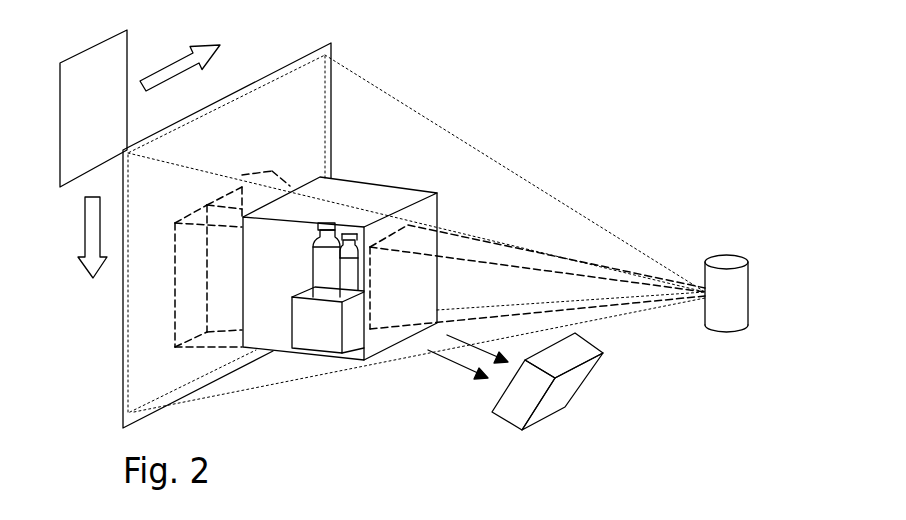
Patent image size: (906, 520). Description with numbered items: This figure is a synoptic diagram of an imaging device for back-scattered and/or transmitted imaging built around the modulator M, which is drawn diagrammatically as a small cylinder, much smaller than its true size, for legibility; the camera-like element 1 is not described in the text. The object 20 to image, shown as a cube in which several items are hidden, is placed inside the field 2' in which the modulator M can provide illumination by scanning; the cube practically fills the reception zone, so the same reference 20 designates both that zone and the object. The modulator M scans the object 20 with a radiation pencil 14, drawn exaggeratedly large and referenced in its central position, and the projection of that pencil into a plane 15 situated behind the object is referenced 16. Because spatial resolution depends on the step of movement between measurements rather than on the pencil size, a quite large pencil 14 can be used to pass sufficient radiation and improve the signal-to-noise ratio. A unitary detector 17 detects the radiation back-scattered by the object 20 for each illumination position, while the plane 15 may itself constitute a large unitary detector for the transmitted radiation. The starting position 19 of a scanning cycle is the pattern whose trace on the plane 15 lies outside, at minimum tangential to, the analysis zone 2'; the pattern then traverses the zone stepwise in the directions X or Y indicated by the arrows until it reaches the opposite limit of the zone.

The camera 1 is at (718, 293).
The field 2' is at (416, 233).
The radiation pencil 14 is at (480, 250).
The plane 15 is at (332, 54).
The projection of the radiation pencil 16 is at (175, 311).
The unitary detector 17 is at (572, 387).
The starting position 19 is at (80, 118).
The object to image 20 is at (408, 198).
The modulator M is at (727, 333).
The direction X is at (171, 62).
The direction Y is at (85, 225).